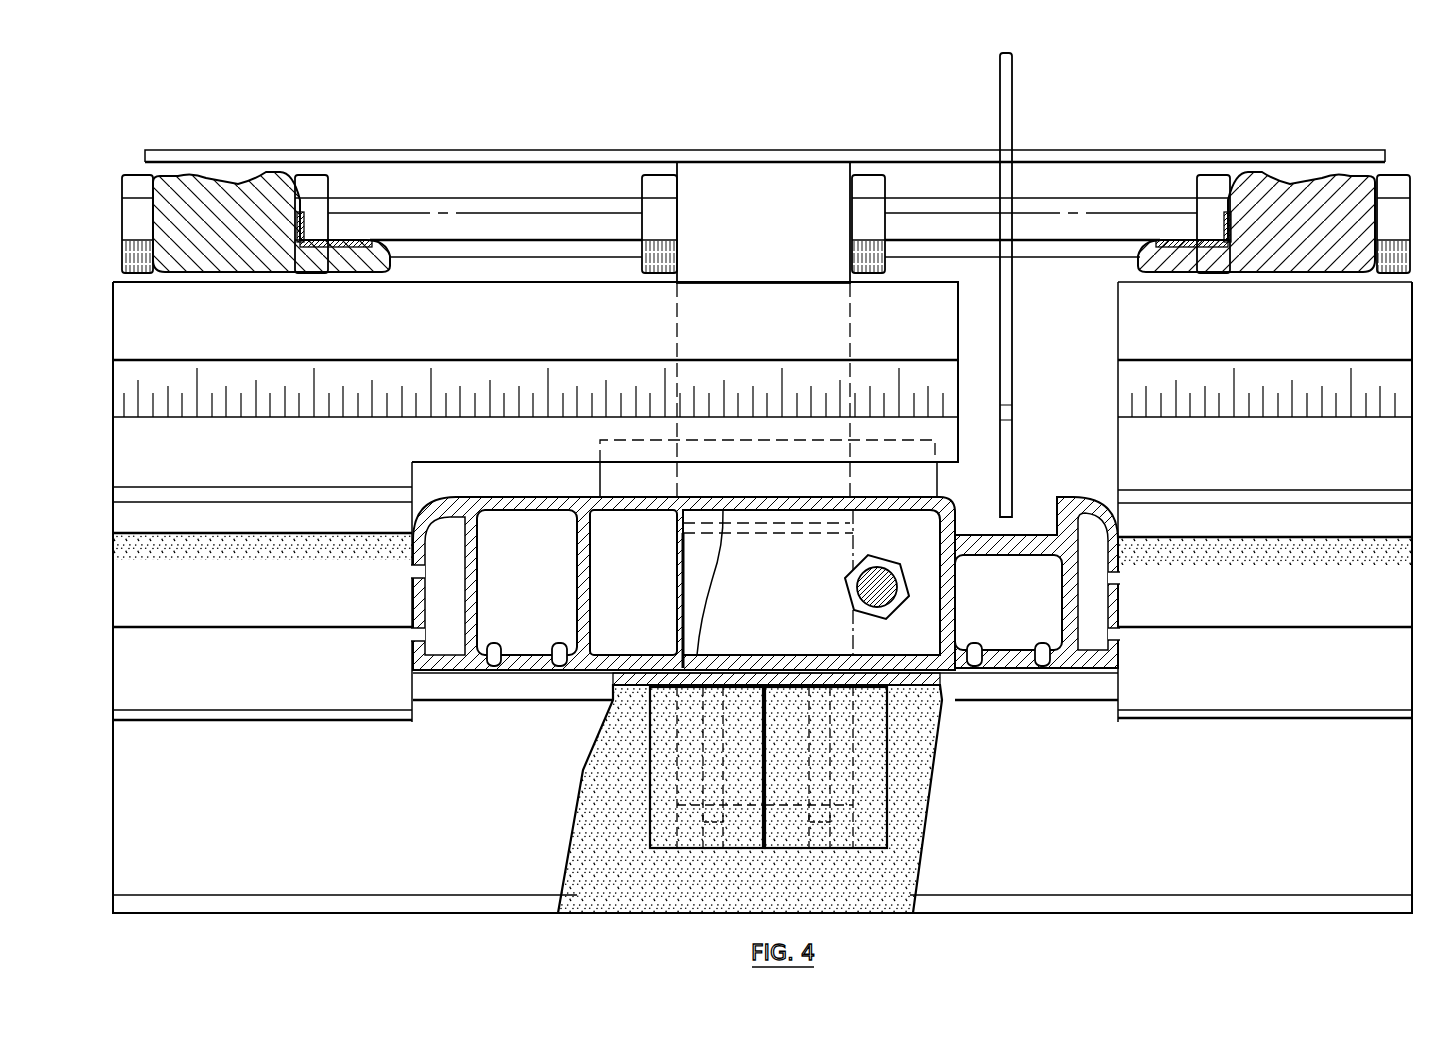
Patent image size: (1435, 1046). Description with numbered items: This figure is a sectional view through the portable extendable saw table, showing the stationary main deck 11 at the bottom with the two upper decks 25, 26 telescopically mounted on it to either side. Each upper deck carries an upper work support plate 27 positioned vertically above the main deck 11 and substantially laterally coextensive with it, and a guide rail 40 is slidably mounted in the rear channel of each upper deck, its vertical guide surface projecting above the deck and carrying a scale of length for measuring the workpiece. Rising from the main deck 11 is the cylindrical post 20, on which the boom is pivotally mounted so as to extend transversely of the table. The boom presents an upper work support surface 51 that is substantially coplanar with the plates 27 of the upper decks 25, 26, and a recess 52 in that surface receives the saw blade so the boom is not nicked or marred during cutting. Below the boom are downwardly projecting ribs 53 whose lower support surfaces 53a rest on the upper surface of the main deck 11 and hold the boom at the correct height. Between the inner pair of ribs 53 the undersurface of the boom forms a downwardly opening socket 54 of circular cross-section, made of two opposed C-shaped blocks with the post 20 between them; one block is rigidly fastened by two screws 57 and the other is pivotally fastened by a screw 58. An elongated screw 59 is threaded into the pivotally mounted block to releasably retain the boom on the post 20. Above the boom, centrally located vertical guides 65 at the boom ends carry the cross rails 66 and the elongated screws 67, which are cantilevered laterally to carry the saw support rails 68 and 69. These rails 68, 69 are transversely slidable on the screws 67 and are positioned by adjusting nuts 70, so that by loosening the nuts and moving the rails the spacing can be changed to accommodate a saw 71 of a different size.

The main deck 11 is at (1158, 822).
The post 20 is at (683, 545).
The upper deck 25 is at (221, 601).
The upper deck 26 is at (1238, 601).
The upper work support plate 27 is at (273, 494).
The guide rail 40 is at (505, 337).
The upper work support surface 51 is at (514, 497).
The recess 52 is at (1024, 537).
The ribs 53 is at (577, 600).
The lower support surfaces 53a is at (560, 668).
The socket 54 is at (620, 591).
The screws 57 is at (815, 752).
The screw 58 is at (712, 748).
The elongated screw 59 is at (865, 586).
The vertical guides 65 is at (756, 196).
The cross rails 66 is at (466, 165).
The elongated screws 67 is at (537, 210).
The saw support rail 68 is at (228, 182).
The saw support rail 69 is at (1296, 182).
The adjusting nuts 70 is at (132, 178).
The saw 71 is at (1014, 88).